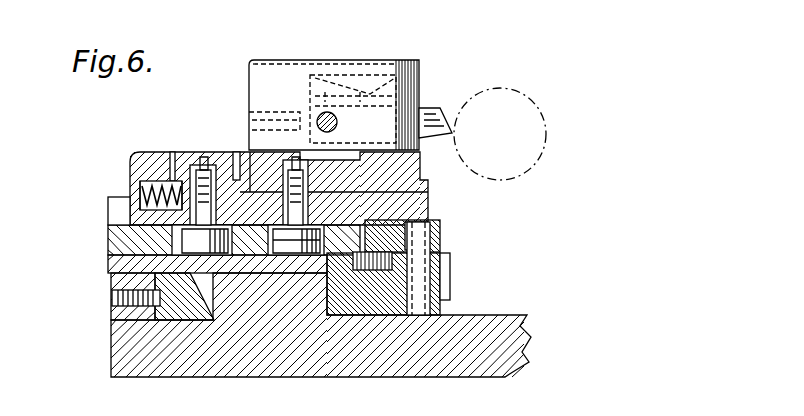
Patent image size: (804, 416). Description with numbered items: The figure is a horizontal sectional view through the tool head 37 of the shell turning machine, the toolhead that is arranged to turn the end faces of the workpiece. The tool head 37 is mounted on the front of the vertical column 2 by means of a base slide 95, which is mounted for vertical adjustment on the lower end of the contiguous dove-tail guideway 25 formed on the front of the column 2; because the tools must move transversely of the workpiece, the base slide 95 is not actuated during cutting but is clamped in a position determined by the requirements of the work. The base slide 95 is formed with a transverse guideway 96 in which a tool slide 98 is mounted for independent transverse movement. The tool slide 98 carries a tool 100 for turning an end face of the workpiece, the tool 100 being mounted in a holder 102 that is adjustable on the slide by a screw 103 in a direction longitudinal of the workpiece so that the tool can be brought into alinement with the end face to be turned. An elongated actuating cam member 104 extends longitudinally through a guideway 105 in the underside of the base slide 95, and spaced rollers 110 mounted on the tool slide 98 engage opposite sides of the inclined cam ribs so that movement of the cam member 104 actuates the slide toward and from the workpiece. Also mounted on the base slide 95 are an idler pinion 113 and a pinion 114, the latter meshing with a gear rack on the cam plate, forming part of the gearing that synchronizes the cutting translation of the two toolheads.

The vertical column 2 is at (162, 374).
The dove-tail guideways 25 is at (150, 301).
The tool head 37 is at (455, 230).
The base slide 95 is at (110, 270).
The transverse guideway 96 is at (116, 207).
The tool slide 98 is at (128, 163).
The tool 100 is at (430, 110).
The holder 102 is at (249, 89).
The screw 103 is at (338, 122).
The actuating cam member 104 is at (300, 236).
The guideway 105 is at (110, 254).
The rollers 110 is at (210, 256).
The idler pinion 113 is at (412, 282).
The pinion 114 is at (380, 268).